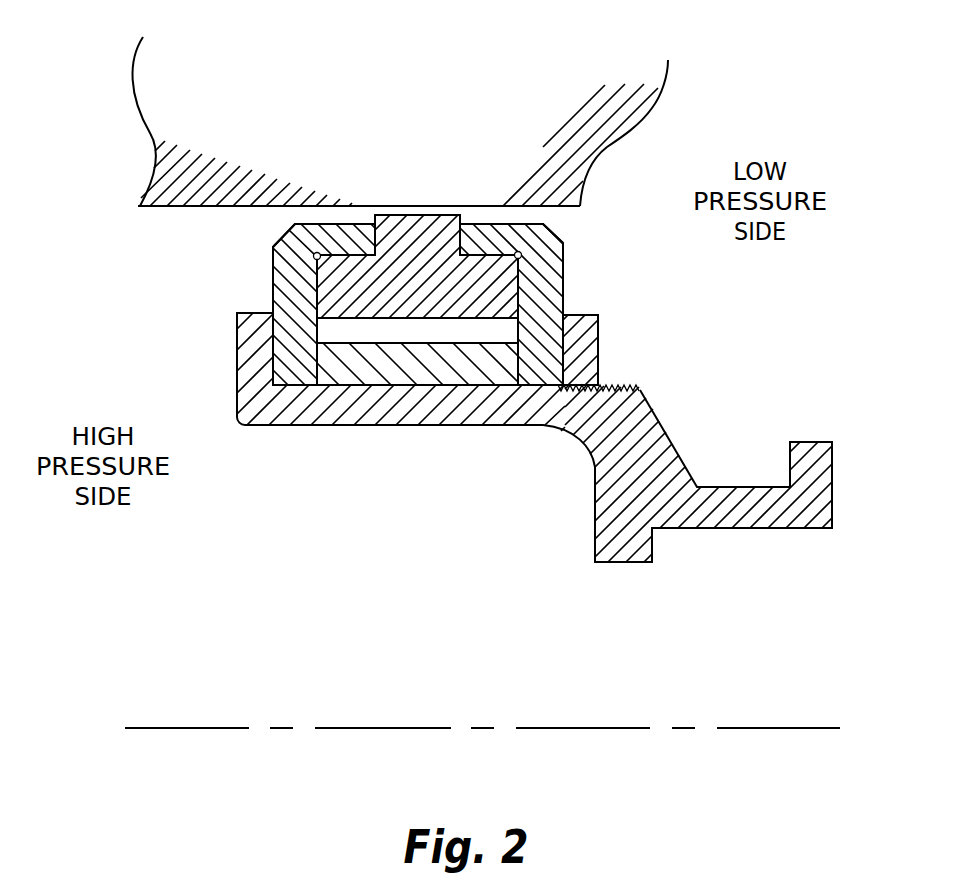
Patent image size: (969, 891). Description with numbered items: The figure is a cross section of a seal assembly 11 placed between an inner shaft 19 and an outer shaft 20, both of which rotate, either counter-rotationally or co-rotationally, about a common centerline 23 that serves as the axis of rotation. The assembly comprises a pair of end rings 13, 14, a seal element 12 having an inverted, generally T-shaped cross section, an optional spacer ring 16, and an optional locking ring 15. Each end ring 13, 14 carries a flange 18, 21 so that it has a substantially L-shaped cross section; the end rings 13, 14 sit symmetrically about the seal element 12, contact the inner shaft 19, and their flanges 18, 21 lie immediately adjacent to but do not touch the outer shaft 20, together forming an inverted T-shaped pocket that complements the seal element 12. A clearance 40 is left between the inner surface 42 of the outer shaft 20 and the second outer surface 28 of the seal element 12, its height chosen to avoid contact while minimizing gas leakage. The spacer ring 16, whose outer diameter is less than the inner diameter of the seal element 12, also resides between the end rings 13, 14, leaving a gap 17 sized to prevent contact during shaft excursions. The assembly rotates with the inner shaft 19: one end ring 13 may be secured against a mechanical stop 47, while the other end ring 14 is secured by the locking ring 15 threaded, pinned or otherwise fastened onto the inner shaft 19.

The seal assembly 11 is at (630, 362).
The seal element 12 is at (418, 316).
The end ring 13 is at (261, 300).
The end ring 14 is at (568, 300).
The locking ring 15 is at (592, 327).
The spacer ring 16 is at (362, 367).
The gap 17 is at (492, 461).
The flange 18 is at (330, 242).
The inner shaft 19 is at (610, 540).
The outer shaft 20 is at (335, 164).
The flange 21 is at (502, 240).
The centerline 23 is at (743, 728).
The second outer surface 28 is at (432, 215).
The clearance 40 is at (408, 215).
The inner surface 42 is at (172, 206).
The mechanical stop 47 is at (243, 340).